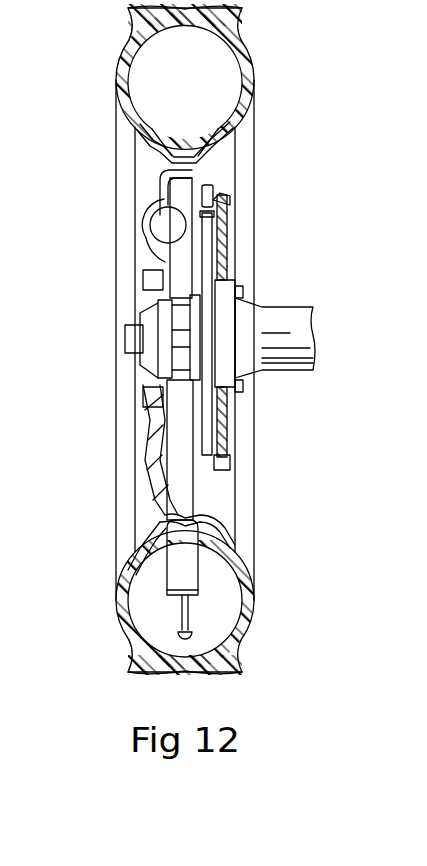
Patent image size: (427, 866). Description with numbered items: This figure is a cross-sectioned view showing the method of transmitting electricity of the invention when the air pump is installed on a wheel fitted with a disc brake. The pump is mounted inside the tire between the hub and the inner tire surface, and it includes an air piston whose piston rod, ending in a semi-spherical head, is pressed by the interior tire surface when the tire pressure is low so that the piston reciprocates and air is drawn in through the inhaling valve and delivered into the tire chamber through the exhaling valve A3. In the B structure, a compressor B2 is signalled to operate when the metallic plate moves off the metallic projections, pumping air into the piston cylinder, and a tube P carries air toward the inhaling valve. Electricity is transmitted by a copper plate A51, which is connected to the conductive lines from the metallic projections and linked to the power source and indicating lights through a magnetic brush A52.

The compressor B2 is at (173, 213).
The magnetic brush A52 is at (210, 197).
The copper plate A51 is at (223, 203).
The exhaling valve A3 is at (192, 540).
The tube P is at (148, 477).